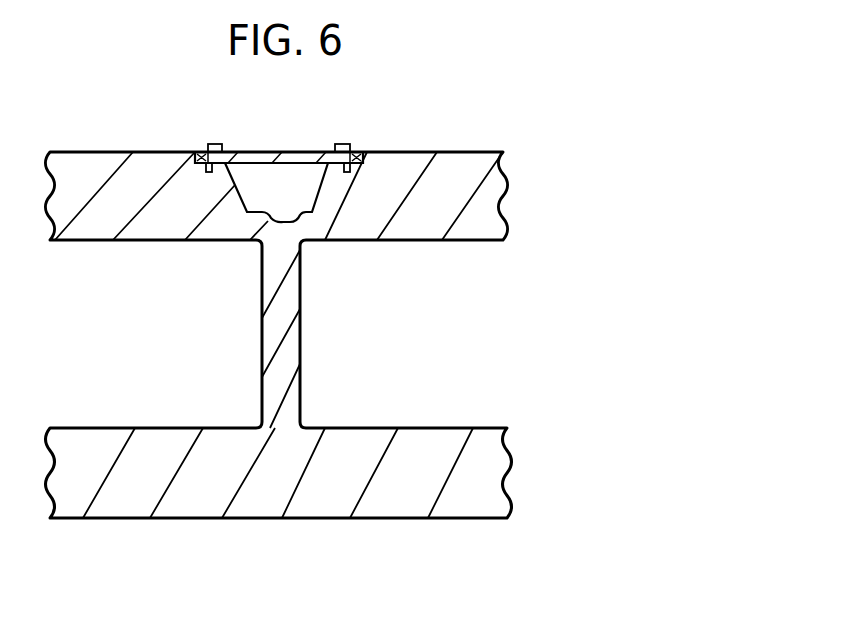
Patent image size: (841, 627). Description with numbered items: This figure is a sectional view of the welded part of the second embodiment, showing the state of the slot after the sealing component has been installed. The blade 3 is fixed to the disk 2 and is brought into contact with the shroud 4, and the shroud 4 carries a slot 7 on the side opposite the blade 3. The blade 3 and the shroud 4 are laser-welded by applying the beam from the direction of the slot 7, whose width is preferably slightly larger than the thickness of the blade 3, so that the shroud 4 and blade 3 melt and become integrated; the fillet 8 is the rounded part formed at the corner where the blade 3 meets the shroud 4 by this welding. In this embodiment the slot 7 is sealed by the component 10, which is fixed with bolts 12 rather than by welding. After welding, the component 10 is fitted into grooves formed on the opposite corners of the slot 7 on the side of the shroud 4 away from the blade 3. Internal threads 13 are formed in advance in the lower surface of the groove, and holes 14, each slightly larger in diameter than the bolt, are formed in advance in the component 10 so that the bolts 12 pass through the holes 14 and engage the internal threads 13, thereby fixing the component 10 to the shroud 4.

The disk 2 is at (274, 490).
The blade 3 is at (285, 360).
The shroud 4 is at (412, 165).
The slot 7 is at (306, 186).
The fillet 8 is at (245, 245).
The component 10 is at (285, 158).
The bolt 12 is at (213, 144).
The internal thread 13 is at (210, 171).
The hole 14 is at (206, 151).